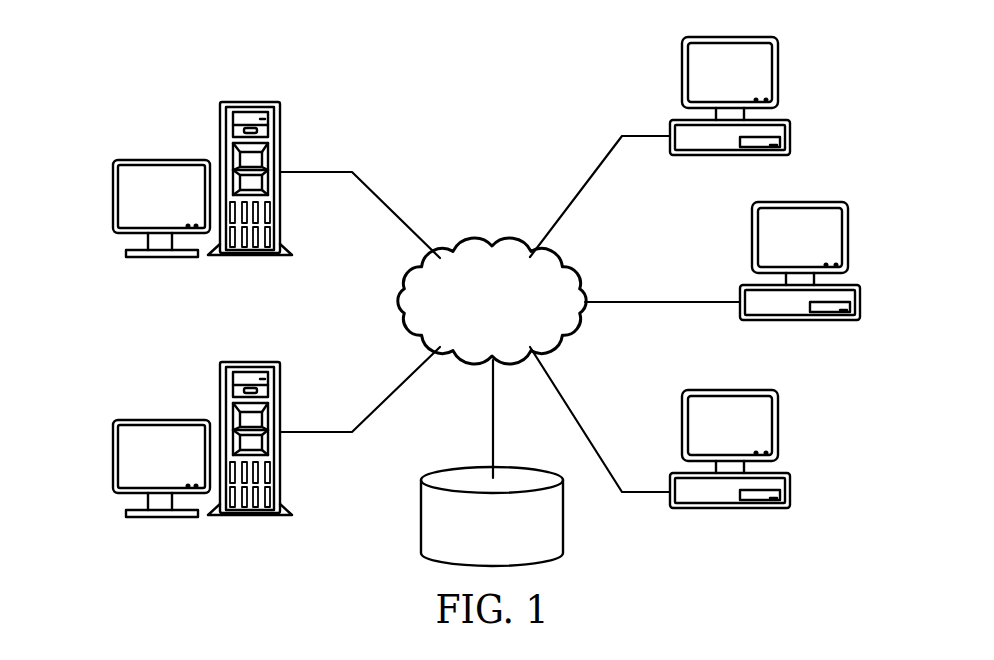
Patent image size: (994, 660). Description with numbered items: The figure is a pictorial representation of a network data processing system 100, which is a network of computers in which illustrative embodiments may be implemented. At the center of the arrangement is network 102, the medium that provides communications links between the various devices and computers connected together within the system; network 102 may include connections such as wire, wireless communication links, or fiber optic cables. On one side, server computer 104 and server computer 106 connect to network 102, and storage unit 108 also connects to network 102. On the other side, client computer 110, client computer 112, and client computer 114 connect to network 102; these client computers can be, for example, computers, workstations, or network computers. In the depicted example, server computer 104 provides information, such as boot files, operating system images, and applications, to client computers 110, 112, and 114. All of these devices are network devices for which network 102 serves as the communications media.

The network data processing system 100 is at (355, 76).
The network 102 is at (462, 250).
The server computer 104 is at (113, 195).
The server computer 106 is at (113, 455).
The storage unit 108 is at (420, 512).
The client computer 110 is at (790, 128).
The client computer 112 is at (860, 310).
The client computer 114 is at (790, 500).